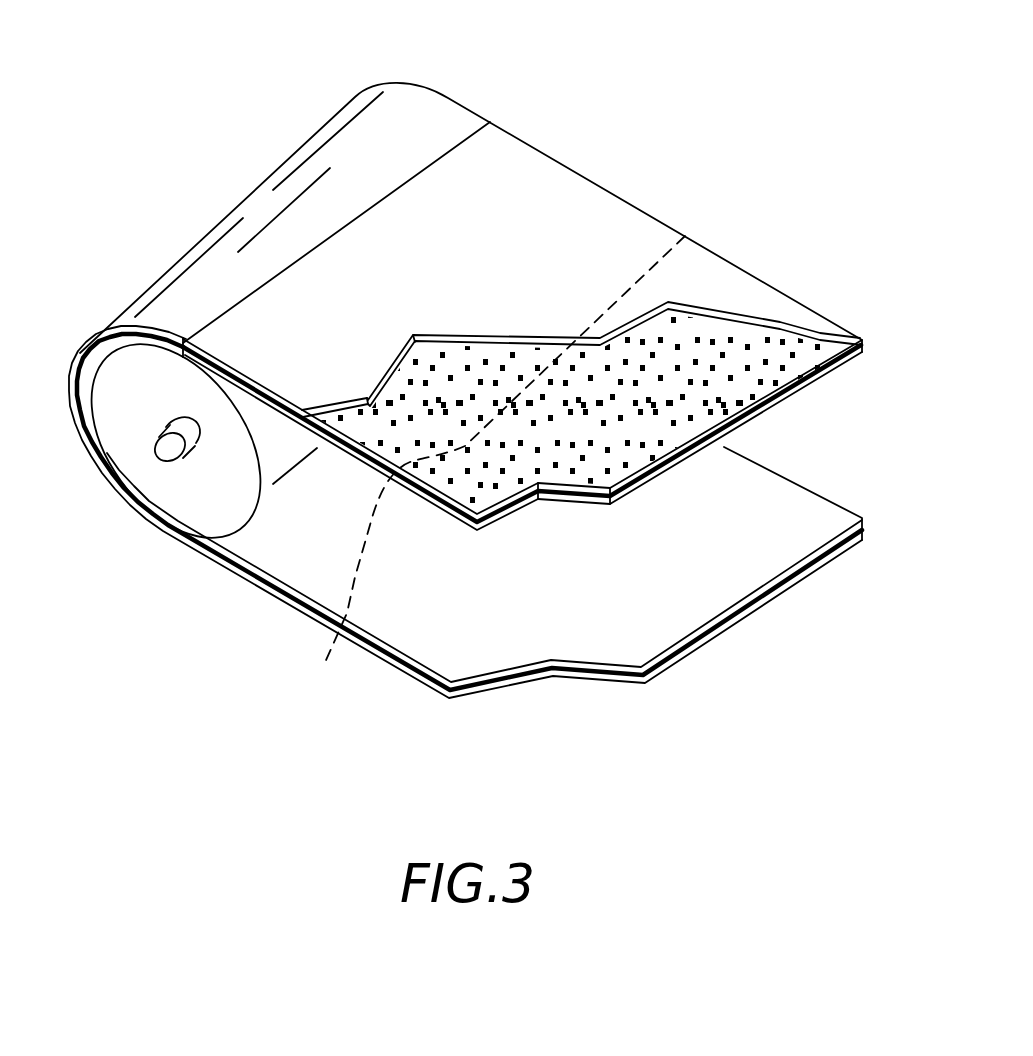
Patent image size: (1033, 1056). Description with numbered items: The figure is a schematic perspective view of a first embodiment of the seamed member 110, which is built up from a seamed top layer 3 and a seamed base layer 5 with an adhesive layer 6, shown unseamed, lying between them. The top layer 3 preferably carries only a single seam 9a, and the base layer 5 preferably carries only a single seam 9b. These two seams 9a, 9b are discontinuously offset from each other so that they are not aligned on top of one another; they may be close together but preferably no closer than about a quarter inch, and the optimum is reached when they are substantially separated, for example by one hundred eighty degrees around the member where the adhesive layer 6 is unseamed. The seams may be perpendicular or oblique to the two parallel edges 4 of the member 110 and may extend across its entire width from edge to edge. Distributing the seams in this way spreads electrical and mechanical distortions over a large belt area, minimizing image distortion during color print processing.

The seamed member 110 is at (800, 126).
The seamed top layer 3 is at (607, 222).
The parallel edges 4 is at (503, 128).
The seamed base layer 5 is at (745, 350).
The adhesive layer 6 is at (753, 398).
The seam of top layer 9a is at (448, 150).
The seam of base layer 9b is at (494, 473).